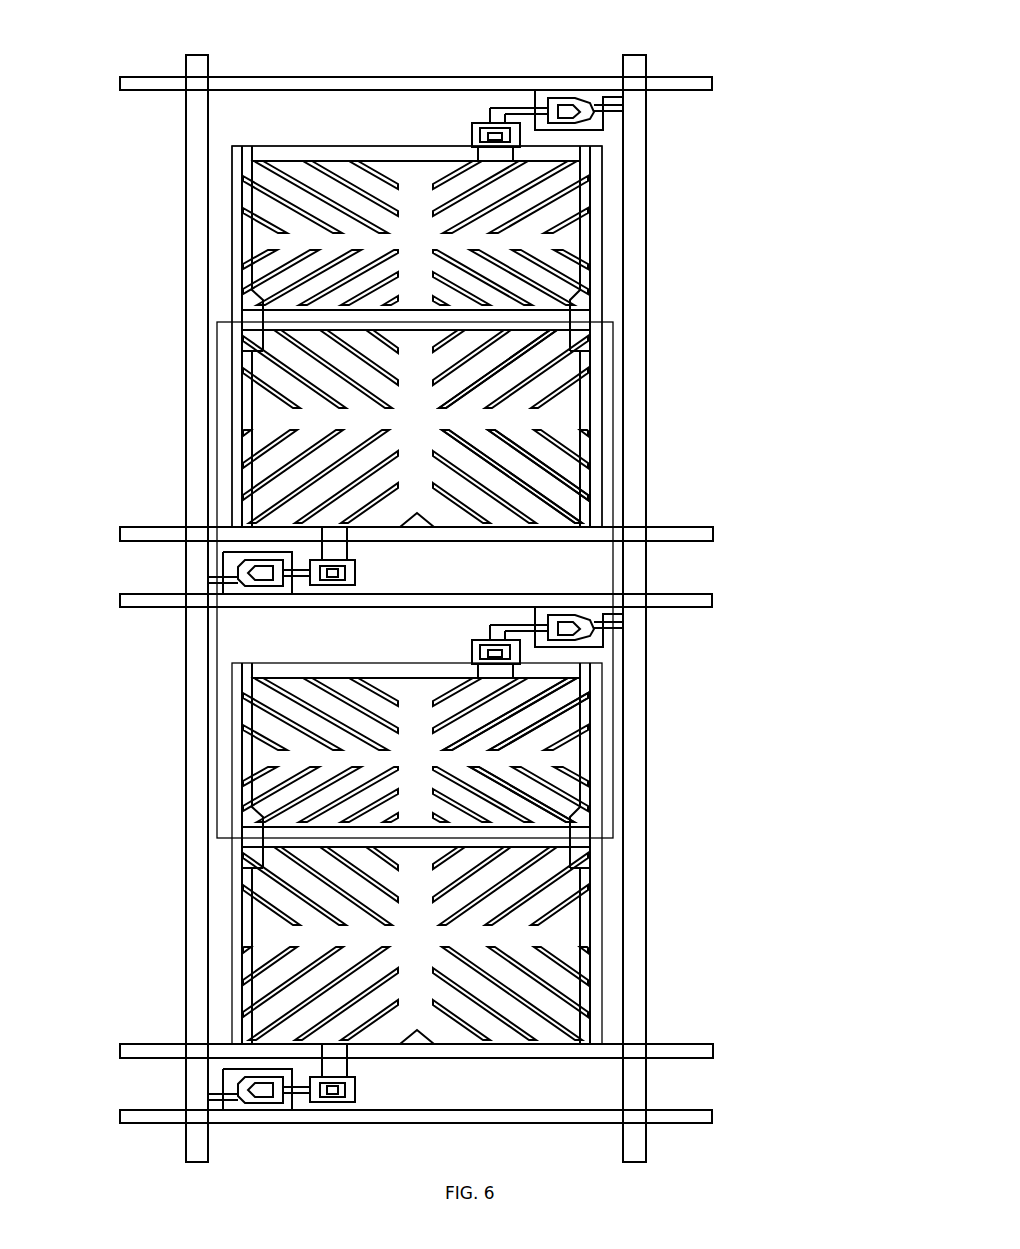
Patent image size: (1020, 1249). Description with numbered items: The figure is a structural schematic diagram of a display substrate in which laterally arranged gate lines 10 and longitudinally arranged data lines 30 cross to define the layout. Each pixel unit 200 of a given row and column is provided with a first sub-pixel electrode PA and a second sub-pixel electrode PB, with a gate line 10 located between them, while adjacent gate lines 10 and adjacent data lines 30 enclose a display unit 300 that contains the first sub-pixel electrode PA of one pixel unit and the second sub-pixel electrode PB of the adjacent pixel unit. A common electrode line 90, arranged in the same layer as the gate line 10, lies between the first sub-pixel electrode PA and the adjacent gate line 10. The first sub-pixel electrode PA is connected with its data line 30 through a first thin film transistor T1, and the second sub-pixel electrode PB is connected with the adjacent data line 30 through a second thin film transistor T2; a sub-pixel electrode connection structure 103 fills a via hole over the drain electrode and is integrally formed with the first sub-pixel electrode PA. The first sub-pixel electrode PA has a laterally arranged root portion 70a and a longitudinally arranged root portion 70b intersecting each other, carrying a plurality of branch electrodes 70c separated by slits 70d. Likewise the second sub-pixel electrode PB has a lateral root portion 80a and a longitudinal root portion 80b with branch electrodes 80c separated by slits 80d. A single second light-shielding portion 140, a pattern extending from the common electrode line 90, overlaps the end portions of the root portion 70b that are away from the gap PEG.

The data line 30 is at (194, 62).
The gate line 10 is at (120, 1115).
The common electrode line 90 is at (120, 535).
The display unit 300 is at (600, 184).
The gap PEG is at (430, 322).
The pixel unit 200 is at (612, 817).
The second sub-pixel electrode PB is at (783, 777).
The first sub-pixel electrode PA is at (757, 433).
The root portion 70a is at (515, 421).
The root portion 70b is at (412, 453).
The branch electrodes 70c is at (535, 486).
The slits 70d is at (550, 507).
The root portion 80a is at (515, 758).
The root portion 80b is at (430, 737).
The branch electrodes 80c is at (557, 723).
The slits 80d is at (530, 725).
The second light-shielding portion 140 is at (415, 518).
The sub-pixel electrode connection structure 103 is at (323, 535).
The first thin film transistor T1 is at (303, 560).
The second thin film transistor T2 is at (528, 642).